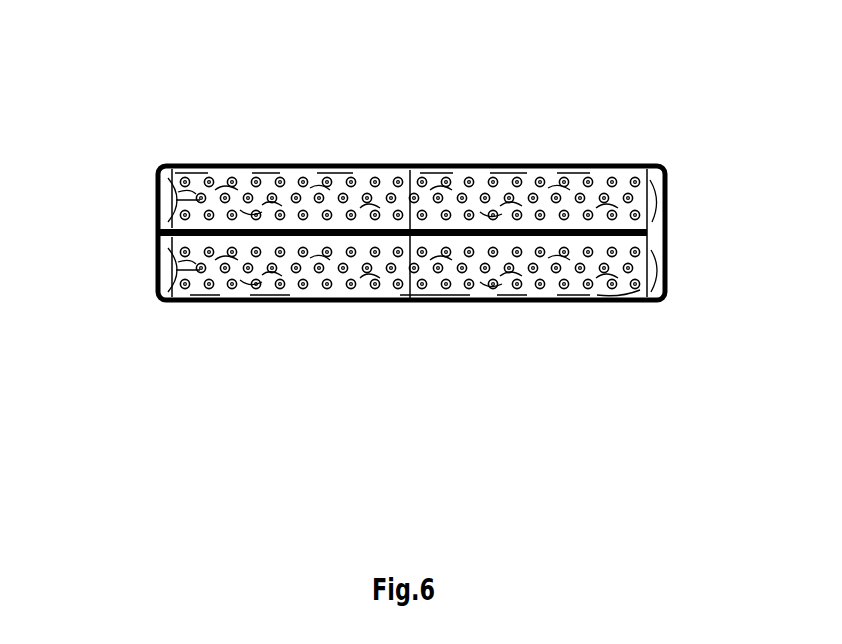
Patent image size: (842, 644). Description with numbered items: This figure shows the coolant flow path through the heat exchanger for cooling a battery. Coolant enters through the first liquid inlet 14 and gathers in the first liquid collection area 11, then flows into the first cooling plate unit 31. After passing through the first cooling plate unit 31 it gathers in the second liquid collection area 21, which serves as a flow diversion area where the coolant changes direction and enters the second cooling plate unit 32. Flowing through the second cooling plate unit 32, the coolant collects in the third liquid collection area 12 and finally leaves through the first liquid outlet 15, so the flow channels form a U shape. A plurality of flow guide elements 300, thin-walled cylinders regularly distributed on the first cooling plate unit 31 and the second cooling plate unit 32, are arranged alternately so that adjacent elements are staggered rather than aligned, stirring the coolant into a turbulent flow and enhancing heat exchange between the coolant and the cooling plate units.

The first liquid collection area 11 is at (158, 303).
The third liquid collection area 12 is at (166, 193).
The first liquid inlet 14 is at (155, 268).
The first liquid outlet 15 is at (160, 190).
The second liquid collection area 21 is at (660, 195).
The first cooling plate unit 31 is at (525, 302).
The second cooling plate unit 32 is at (473, 168).
The flow guide elements 300 is at (252, 288).